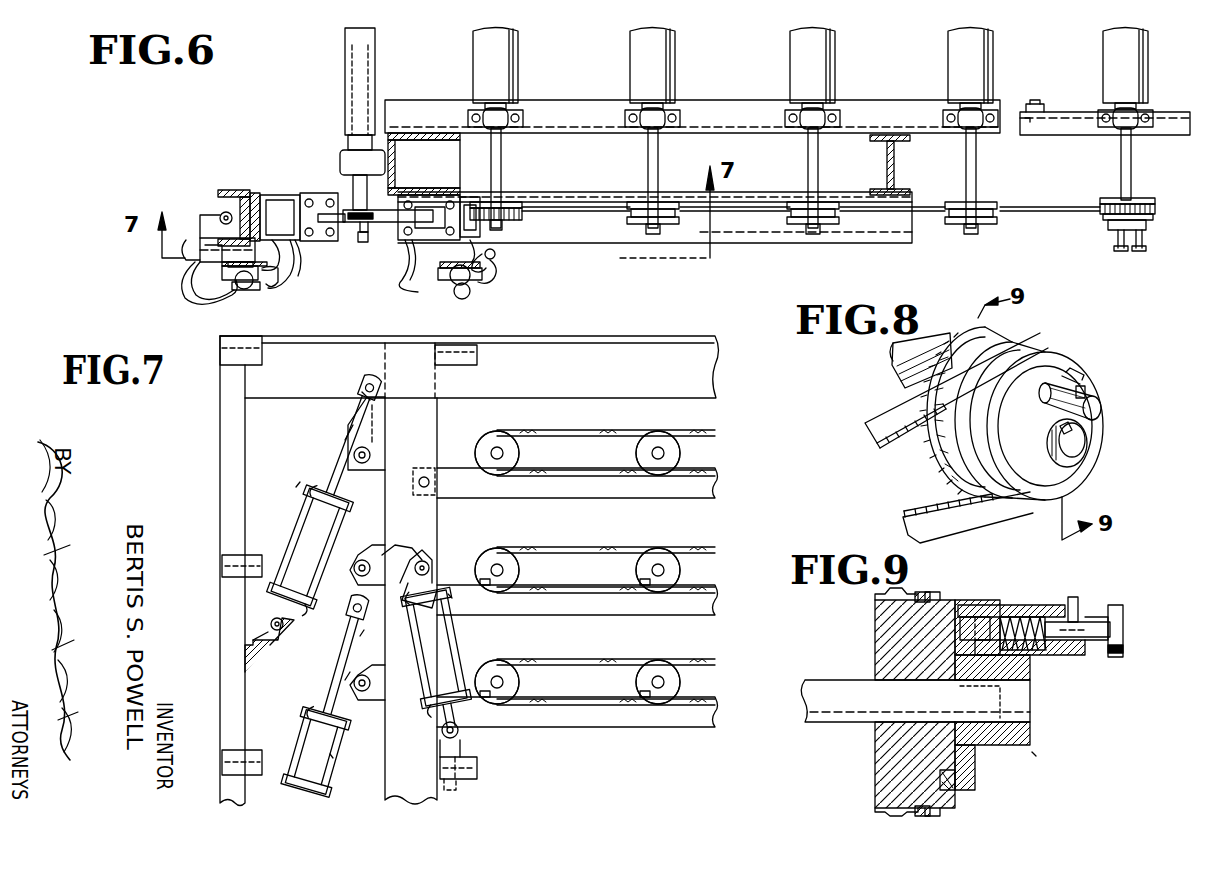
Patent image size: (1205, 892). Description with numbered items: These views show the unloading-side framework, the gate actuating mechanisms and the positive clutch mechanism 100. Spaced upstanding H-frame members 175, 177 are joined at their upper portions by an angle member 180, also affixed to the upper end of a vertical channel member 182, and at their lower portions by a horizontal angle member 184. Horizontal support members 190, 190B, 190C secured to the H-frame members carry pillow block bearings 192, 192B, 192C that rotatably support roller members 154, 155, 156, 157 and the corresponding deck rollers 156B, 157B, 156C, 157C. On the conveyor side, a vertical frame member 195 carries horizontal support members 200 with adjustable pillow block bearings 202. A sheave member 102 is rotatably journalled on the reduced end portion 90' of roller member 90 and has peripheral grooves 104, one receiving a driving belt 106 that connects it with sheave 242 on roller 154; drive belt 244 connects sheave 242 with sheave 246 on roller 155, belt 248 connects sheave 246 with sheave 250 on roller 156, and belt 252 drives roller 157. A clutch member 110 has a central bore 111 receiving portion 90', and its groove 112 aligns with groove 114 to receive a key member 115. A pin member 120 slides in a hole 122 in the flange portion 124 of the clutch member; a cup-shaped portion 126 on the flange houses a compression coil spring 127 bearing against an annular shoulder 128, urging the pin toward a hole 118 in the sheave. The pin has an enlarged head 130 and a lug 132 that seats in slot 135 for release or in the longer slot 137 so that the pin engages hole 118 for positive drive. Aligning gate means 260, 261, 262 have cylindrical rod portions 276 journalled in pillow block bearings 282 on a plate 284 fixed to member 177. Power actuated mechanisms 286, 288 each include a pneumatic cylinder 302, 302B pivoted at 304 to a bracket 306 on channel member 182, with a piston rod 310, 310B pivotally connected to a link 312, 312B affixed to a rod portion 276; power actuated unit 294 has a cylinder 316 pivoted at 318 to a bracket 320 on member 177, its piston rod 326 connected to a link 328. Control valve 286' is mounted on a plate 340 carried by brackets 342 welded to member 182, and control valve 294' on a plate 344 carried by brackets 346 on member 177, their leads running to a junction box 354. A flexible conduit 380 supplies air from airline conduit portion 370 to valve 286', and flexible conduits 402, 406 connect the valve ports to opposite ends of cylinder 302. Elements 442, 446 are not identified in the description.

In FIG. 6, the roller member 90 is at (1102, 107).
In FIG. 8, the roller member 90 is at (893, 360).
In FIG. 9, the roller member 90 is at (878, 729).
In FIG. 8, the reduced end portion 90' is at (1087, 448).
In FIG. 9, the reduced end portion 90' is at (1027, 704).
In FIG. 6, the sprocket clutch assembly 100 is at (1098, 240).
In FIG. 8, the sprocket clutch assembly 100 is at (1104, 356).
In FIG. 9, the sprocket clutch assembly 100 is at (1046, 752).
In FIG. 8, the sheave member 102 is at (1022, 325).
In FIG. 9, the sheave member 102 is at (877, 653).
In FIG. 9, the peripheral grooves 104 is at (880, 618).
In FIG. 6, the driving belt 106 is at (1040, 210).
In FIG. 8, the driving belt 106 is at (900, 405).
In FIG. 9, the driving belt 106 is at (920, 594).
In FIG. 9, the clutch member 110 is at (1010, 660).
In FIG. 9, the central bore 111 is at (1026, 728).
In FIG. 9, the groove 112 is at (1030, 684).
In FIG. 9, the groove 114 is at (990, 684).
In FIG. 8, the key member 115 is at (1075, 430).
In FIG. 9, the key member 115 is at (958, 684).
In FIG. 9, the hole 118 is at (975, 784).
In FIG. 9, the pin member 120 is at (990, 605).
In FIG. 9, the hole 122 is at (960, 608).
In FIG. 9, the flange portion 124 is at (978, 760).
In FIG. 8, the cup-shaped portion 126 is at (1058, 368).
In FIG. 9, the cup-shaped portion 126 is at (1048, 612).
In FIG. 9, the compression coil spring 127 is at (1055, 615).
In FIG. 9, the annular shoulder 128 is at (1010, 612).
In FIG. 8, the enlarged head 130 is at (1100, 407).
In FIG. 9, the enlarged head 130 is at (1125, 635).
In FIG. 8, the lug 132 is at (1082, 376).
In FIG. 9, the lug 132 is at (1078, 600).
In FIG. 8, the slot 135 is at (1088, 392).
In FIG. 9, the slot 135 is at (1090, 610).
In FIG. 9, the slot 137 is at (1092, 652).
In FIG. 6, the roller member 154 is at (960, 41).
In FIG. 6, the roller member 155 is at (800, 41).
In FIG. 6, the roller member 156 is at (640, 42).
In FIG. 7, the roller member 156 is at (670, 452).
In FIG. 7, the roller 156B is at (670, 570).
In FIG. 7, the roller 156C is at (670, 682).
In FIG. 6, the roller member 157 is at (523, 35).
In FIG. 7, the roller member 157 is at (506, 452).
In FIG. 7, the roller 157B is at (506, 570).
In FIG. 7, the roller 157C is at (505, 682).
In FIG. 6, the H-frame member 175 is at (893, 165).
In FIG. 6, the H-frame member 177 is at (394, 132).
In FIG. 7, the H-frame member 177 is at (442, 398).
In FIG. 7, the angle member 180 is at (580, 336).
In FIG. 6, the channel member 182 is at (232, 188).
In FIG. 7, the channel member 182 is at (222, 418).
In FIG. 6, the angle member 184 is at (735, 238).
In FIG. 6, the support members 190 is at (562, 110).
In FIG. 7, the support members 190 is at (700, 494).
In FIG. 7, the conveyor beam 190B is at (704, 610).
In FIG. 7, the conveyor beam 190C is at (694, 728).
In FIG. 6, the pillow block bearings 192 is at (497, 130).
In FIG. 7, the pillow block bearings 192 is at (440, 468).
In FIG. 7, the bearing block 192B is at (470, 560).
In FIG. 7, the bearing block 192C is at (525, 692).
In FIG. 6, the vertical frame member 195 is at (1028, 105).
In FIG. 6, the horizontal support members 200 is at (1048, 130).
In FIG. 6, the pillow block bearings 202 is at (1140, 130).
In FIG. 6, the sheave 242 is at (995, 220).
In FIG. 6, the drive belt 244 is at (852, 200).
In FIG. 6, the sheave 246 is at (815, 232).
In FIG. 6, the drive belt 248 is at (735, 215).
In FIG. 6, the sheave 250 is at (640, 200).
In FIG. 6, the drive belt 252 is at (560, 211).
In FIG. 6, the aligning gate means 260 is at (352, 45).
In FIG. 7, the aligning gate means 260 is at (380, 472).
In FIG. 7, the aligning gate means 261 is at (372, 586).
In FIG. 7, the aligning gate means 262 is at (372, 698).
In FIG. 6, the cylindrical rod portions 276 is at (366, 240).
In FIG. 6, the pillow block bearings 282 is at (345, 162).
In FIG. 6, the plate 284 is at (360, 150).
In FIG. 7, the power actuated mechanism 286 is at (291, 460).
In FIG. 6, the control valve 286' is at (246, 289).
In FIG. 7, the power actuated mechanism 288 is at (345, 762).
In FIG. 7, the power actuated unit 294 is at (463, 657).
In FIG. 6, the control valve 294' is at (503, 276).
In FIG. 6, the pneumatic cylinder 302 is at (292, 196).
In FIG. 7, the pneumatic cylinder 302 is at (283, 535).
In FIG. 7, the cylinder 302B is at (295, 738).
In FIG. 7, the pivot 304 is at (270, 624).
In FIG. 6, the supporting bracket 306 is at (255, 196).
In FIG. 7, the supporting bracket 306 is at (247, 660).
In FIG. 6, the piston rod 310 is at (322, 226).
In FIG. 7, the piston rod 310 is at (345, 440).
In FIG. 7, the piston rod 310B is at (345, 680).
In FIG. 6, the link 312 is at (366, 228).
In FIG. 7, the link 312 is at (375, 400).
In FIG. 7, the clevis 312B is at (360, 636).
In FIG. 6, the pneumatic cylinder 316 is at (436, 195).
In FIG. 7, the pneumatic cylinder 316 is at (452, 598).
In FIG. 7, the pivot 318 is at (465, 745).
In FIG. 7, the supporting bracket 320 is at (460, 786).
In FIG. 7, the piston rod 326 is at (440, 558).
In FIG. 7, the link 328 is at (392, 545).
In FIG. 6, the plate 340 is at (262, 290).
In FIG. 6, the bracket members 342 is at (268, 278).
In FIG. 7, the bracket members 342 is at (262, 352).
In FIG. 6, the plate 344 is at (505, 270).
In FIG. 6, the bracket members 346 is at (494, 256).
In FIG. 7, the bracket members 346 is at (478, 362).
In FIG. 6, the junction box 354 is at (525, 220).
In FIG. 6, the conduit portion 370 is at (205, 218).
In FIG. 6, the flexible conduit portion 380 is at (200, 295).
In FIG. 6, the flexible conduit portion 402 is at (298, 270).
In FIG. 6, the flexible conduit 406 is at (283, 242).
In FIG. 6, the hose 442 is at (418, 285).
In FIG. 6, the fitting 446 is at (458, 288).